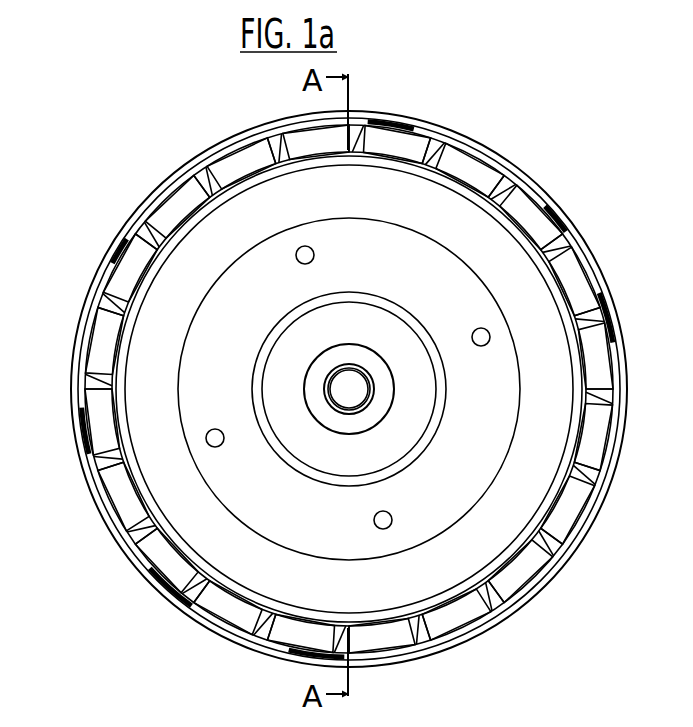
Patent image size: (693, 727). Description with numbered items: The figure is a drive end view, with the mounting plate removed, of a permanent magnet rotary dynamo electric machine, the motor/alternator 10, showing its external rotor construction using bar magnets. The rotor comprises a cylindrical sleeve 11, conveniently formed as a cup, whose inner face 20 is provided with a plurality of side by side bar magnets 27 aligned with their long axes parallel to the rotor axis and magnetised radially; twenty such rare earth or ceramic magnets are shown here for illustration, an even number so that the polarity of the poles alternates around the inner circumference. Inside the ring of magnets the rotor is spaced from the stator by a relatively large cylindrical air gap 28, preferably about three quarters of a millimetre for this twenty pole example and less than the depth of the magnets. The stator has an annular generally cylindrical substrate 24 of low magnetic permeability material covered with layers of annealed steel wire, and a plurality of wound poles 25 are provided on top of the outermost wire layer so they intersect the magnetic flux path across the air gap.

The motor/alternator 10 is at (620, 187).
The cylindrical sleeve 11 is at (607, 283).
The inner face of the sleeve 20 is at (432, 633).
The annular generally cylindrical substrate 24 is at (560, 437).
The wound poles 25 is at (617, 332).
The bar magnets 27 is at (412, 132).
The cylindrical air gap 28 is at (497, 579).